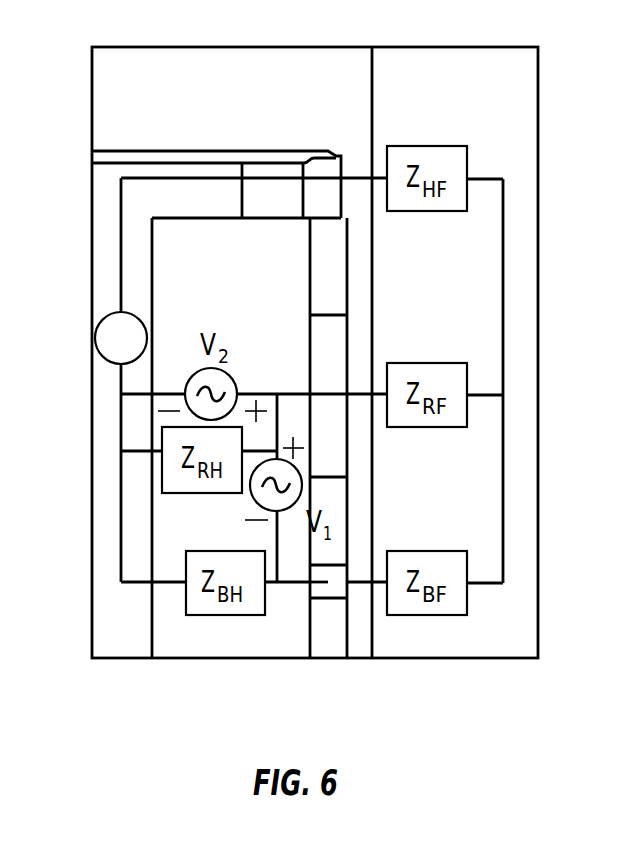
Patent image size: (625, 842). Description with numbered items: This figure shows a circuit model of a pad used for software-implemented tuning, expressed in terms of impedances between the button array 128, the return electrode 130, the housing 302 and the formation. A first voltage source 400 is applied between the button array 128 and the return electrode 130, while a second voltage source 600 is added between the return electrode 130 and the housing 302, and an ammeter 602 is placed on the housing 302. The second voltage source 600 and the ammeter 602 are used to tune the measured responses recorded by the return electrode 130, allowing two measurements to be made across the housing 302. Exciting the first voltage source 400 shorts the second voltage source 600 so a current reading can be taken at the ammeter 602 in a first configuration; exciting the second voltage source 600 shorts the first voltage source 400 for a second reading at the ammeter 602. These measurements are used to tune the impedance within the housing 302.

The button array 128 is at (328, 582).
The return electrode 130 is at (348, 332).
The housing 302 is at (184, 178).
The first voltage source 400 is at (250, 502).
The second voltage source 600 is at (184, 388).
The ammeter 602 is at (110, 313).